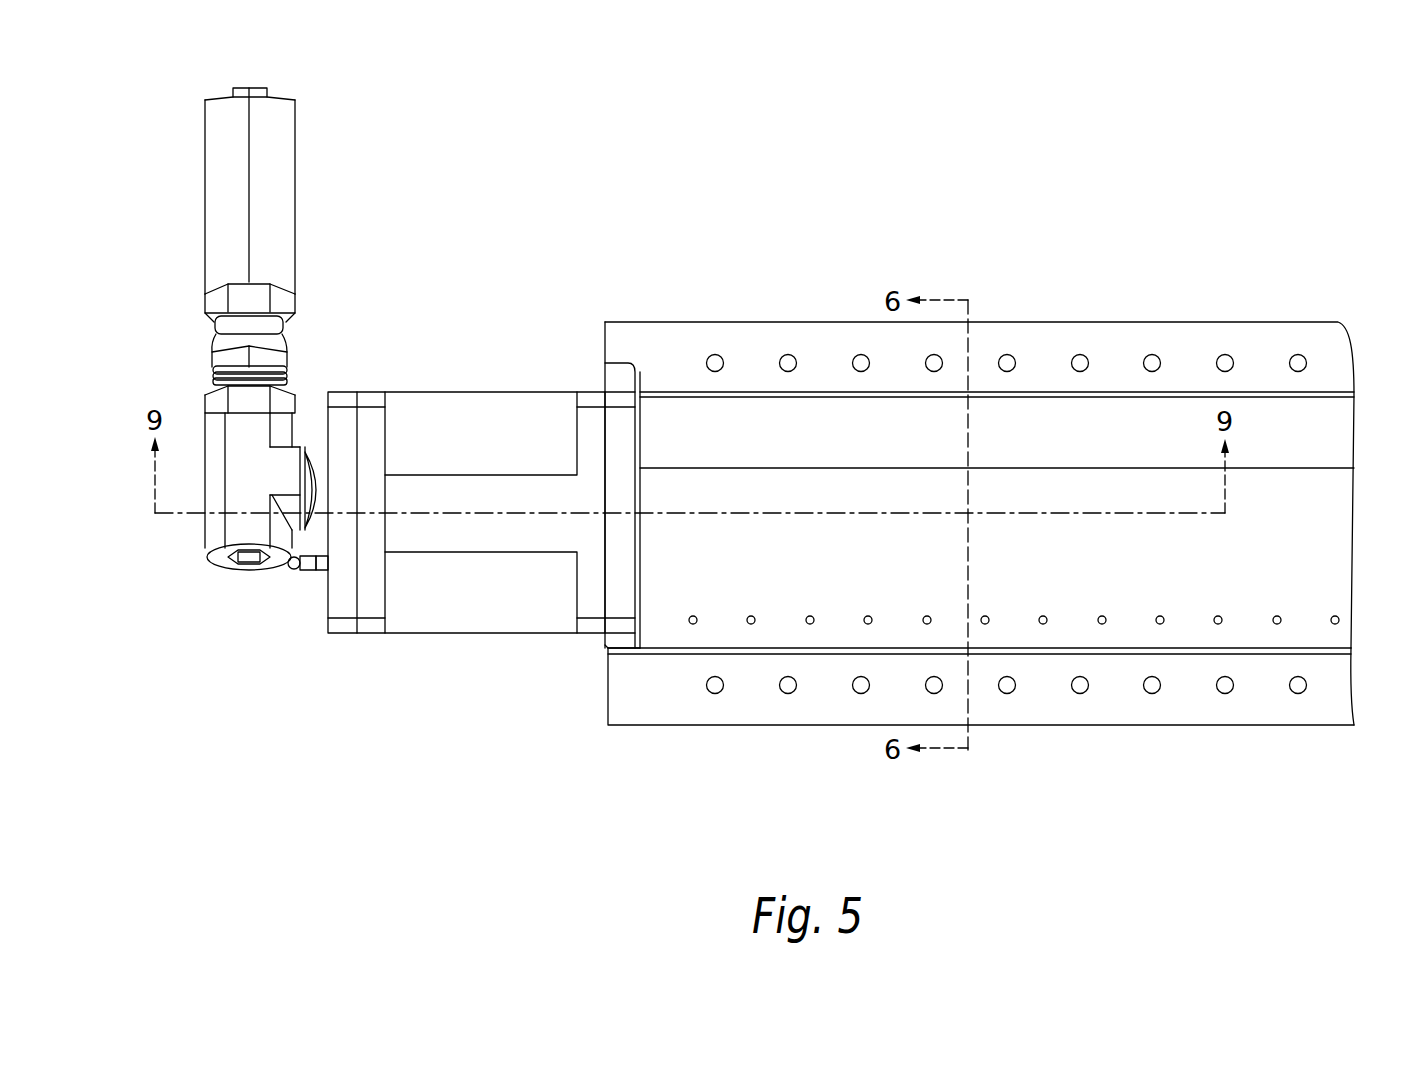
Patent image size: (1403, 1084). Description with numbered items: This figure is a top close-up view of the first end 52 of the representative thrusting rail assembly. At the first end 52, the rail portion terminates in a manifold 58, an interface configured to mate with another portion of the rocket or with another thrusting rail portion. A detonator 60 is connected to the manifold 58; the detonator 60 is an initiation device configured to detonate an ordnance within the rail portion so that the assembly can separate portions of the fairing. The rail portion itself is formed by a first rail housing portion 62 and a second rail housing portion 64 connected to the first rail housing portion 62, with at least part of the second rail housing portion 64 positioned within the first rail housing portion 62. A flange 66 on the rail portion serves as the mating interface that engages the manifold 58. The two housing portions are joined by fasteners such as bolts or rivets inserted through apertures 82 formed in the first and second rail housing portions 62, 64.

The first end 52 is at (492, 140).
The manifold 58 is at (455, 414).
The detonator 60 is at (228, 248).
The first rail housing portion 62 is at (1057, 445).
The second rail housing portion 64 is at (826, 684).
The flange 66 is at (612, 571).
The apertures 82 is at (689, 626).